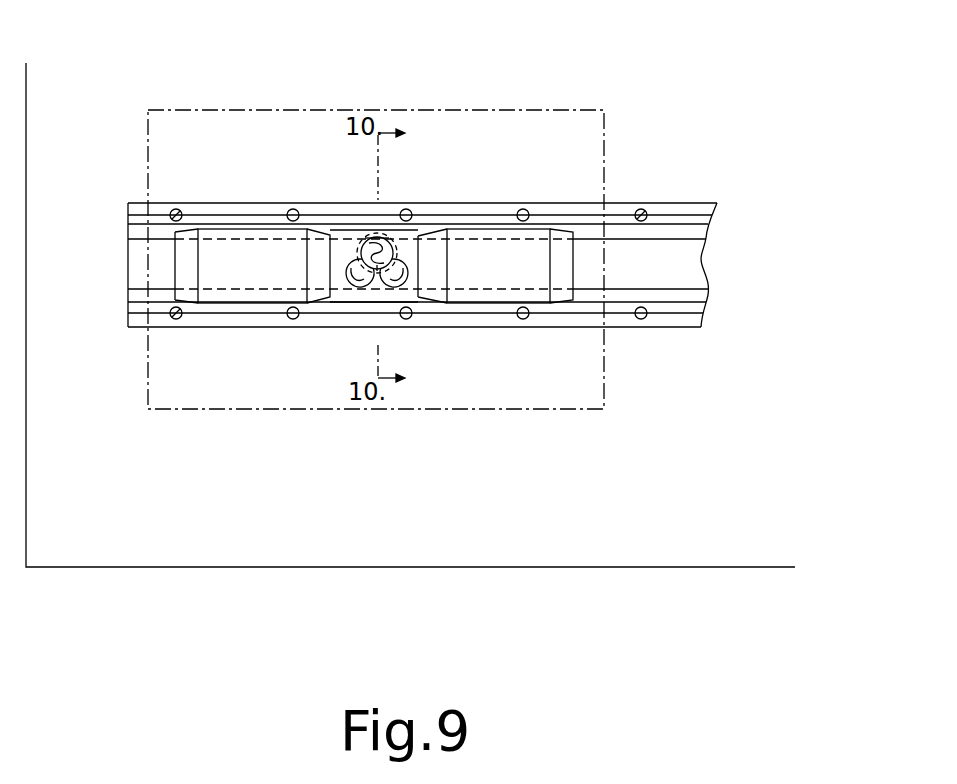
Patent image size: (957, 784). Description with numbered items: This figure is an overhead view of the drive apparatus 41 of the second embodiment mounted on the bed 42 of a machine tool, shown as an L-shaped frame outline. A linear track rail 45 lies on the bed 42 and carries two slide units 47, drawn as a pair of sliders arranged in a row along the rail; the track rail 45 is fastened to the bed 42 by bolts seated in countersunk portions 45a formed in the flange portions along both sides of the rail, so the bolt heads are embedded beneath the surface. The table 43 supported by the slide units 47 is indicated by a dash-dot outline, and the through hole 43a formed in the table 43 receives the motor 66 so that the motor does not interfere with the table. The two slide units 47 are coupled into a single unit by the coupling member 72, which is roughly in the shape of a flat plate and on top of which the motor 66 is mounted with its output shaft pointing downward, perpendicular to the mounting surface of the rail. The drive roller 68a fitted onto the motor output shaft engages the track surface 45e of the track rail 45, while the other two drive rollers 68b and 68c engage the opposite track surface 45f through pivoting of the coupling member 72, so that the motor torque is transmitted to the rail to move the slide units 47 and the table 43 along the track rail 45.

The drive apparatus 41 is at (436, 253).
The bed 42 is at (242, 551).
The table 43 is at (508, 124).
The through hole 43a is at (355, 232).
The track rail 45 is at (138, 330).
The countersunk portion 45a is at (177, 208).
The track surface 45e is at (137, 257).
The track surface 45f is at (140, 283).
The slide unit 47 is at (250, 305).
The motor 66 is at (384, 237).
The drive roller 68a is at (368, 236).
The drive roller 68b is at (346, 289).
The drive roller 68c is at (409, 289).
The coupling member 72 is at (400, 238).